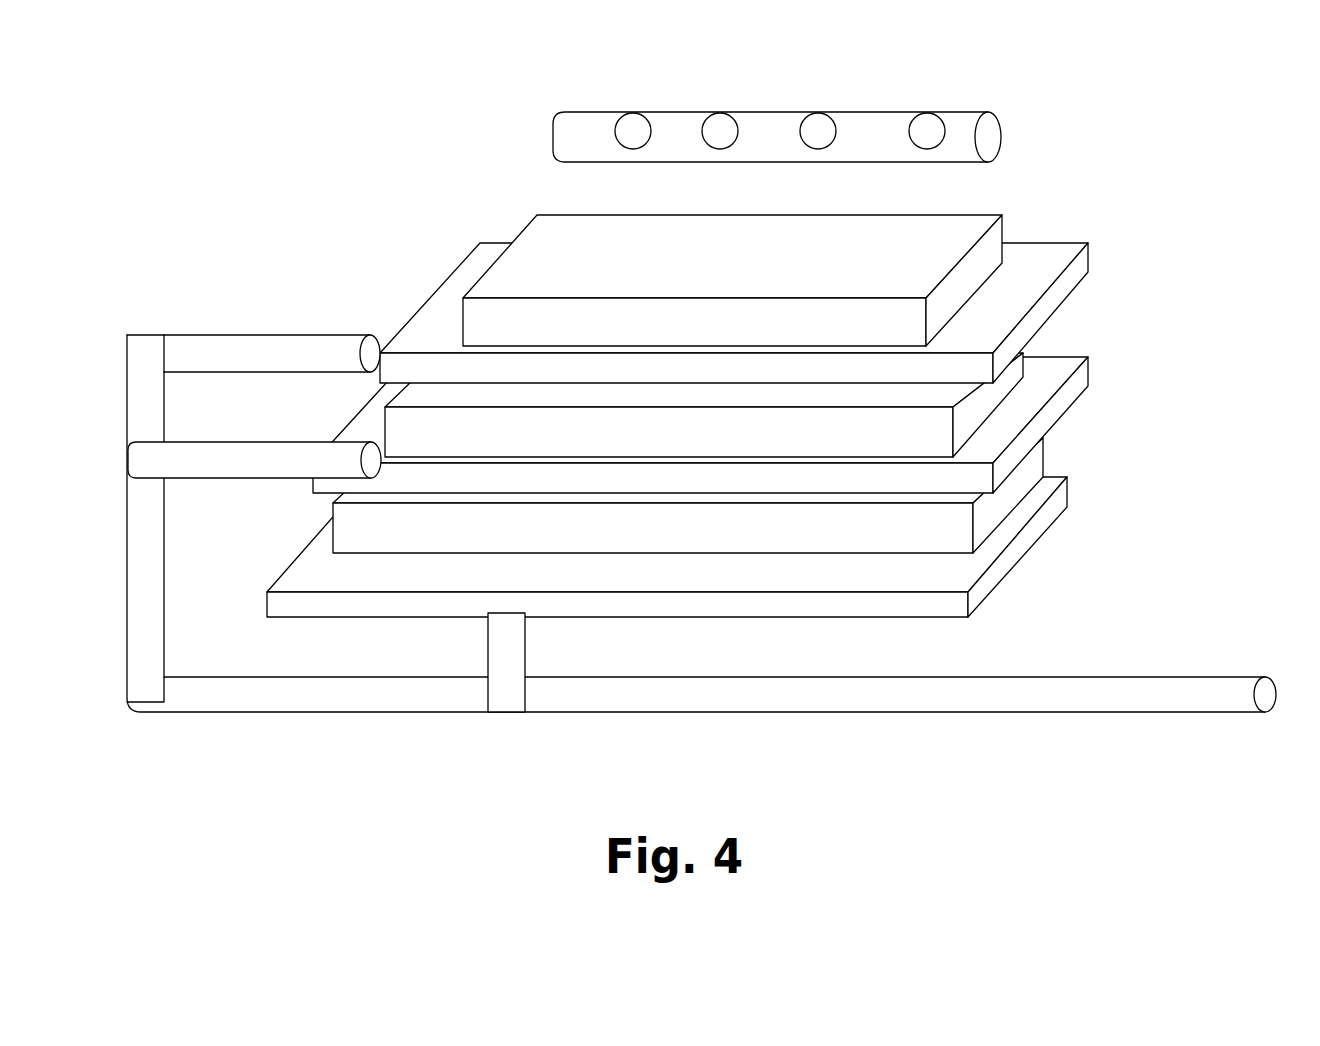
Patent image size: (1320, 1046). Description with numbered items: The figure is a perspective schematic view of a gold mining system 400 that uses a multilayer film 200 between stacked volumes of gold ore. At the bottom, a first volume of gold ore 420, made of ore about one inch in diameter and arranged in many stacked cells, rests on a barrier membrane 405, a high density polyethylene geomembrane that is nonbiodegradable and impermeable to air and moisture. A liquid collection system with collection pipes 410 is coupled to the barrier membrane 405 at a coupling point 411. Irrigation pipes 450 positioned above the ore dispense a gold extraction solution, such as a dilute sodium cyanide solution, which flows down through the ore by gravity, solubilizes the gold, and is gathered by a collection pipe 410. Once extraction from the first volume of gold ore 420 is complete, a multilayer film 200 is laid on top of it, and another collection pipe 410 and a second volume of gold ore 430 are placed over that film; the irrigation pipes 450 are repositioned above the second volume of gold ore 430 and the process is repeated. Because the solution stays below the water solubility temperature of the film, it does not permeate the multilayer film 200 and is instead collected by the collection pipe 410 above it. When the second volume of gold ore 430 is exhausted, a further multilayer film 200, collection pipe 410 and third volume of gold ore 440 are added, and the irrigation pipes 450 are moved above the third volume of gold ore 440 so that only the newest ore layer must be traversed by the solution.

The gold mining system 400 is at (290, 88).
The barrier membrane 405 is at (1004, 597).
The collection pipe 410 is at (609, 702).
The coupling point 411 is at (540, 631).
The first volume of gold ore 420 is at (324, 515).
The multilayer film 200 is at (1034, 456).
The second volume of gold ore 430 is at (1035, 342).
The third volume of gold ore 440 is at (1014, 222).
The irrigation pipes 450 is at (1010, 132).